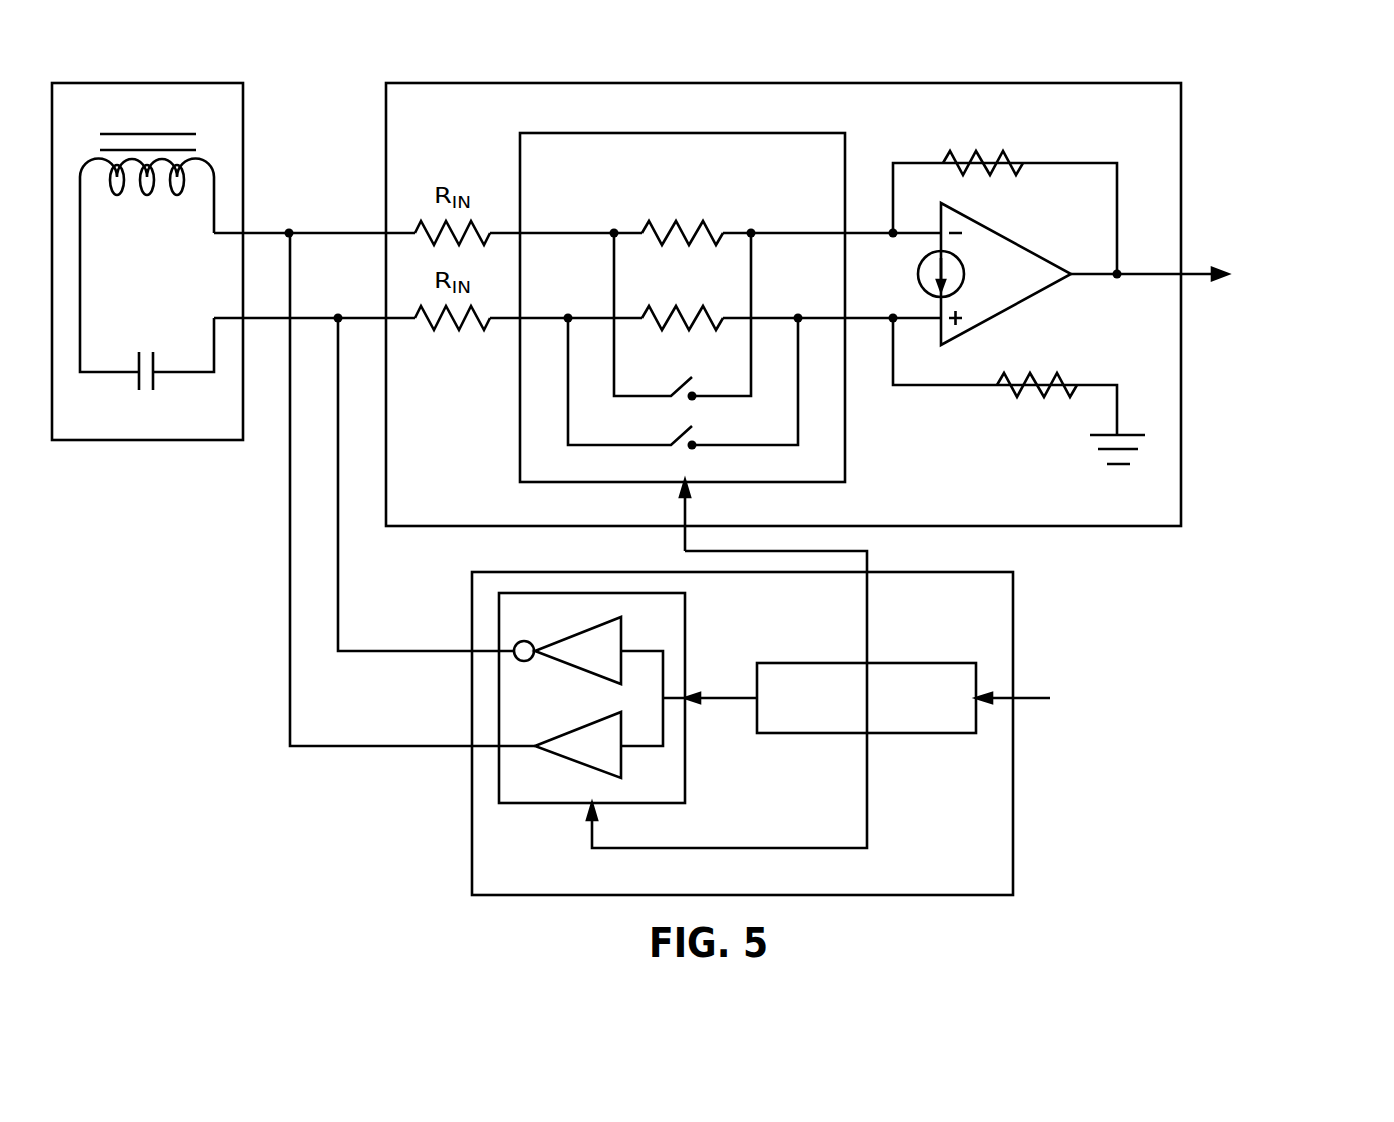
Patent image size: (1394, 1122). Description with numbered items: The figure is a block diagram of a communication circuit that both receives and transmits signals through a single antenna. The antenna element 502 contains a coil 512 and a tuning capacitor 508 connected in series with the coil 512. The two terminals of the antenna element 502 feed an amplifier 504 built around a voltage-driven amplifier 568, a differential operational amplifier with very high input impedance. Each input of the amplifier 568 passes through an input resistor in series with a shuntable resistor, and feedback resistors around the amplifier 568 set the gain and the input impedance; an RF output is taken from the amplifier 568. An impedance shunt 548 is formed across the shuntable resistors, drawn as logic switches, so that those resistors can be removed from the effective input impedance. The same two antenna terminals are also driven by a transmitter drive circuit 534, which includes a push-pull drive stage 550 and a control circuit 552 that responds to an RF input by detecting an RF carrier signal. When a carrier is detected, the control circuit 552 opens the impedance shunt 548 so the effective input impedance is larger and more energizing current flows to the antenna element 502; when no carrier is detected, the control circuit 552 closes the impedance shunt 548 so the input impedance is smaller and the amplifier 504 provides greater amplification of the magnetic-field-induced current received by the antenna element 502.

The antenna element 502 is at (147, 83).
The amplifier 504 is at (795, 83).
The tuning capacitor 508 is at (135, 360).
The coil 512 is at (137, 195).
The transmitter drive circuit 534 is at (1013, 866).
The impedance shunt 548 is at (682, 133).
The push-pull drive stage 550 is at (687, 624).
The control circuit 552 is at (913, 663).
The voltage-driven amplifier 568 is at (1006, 236).